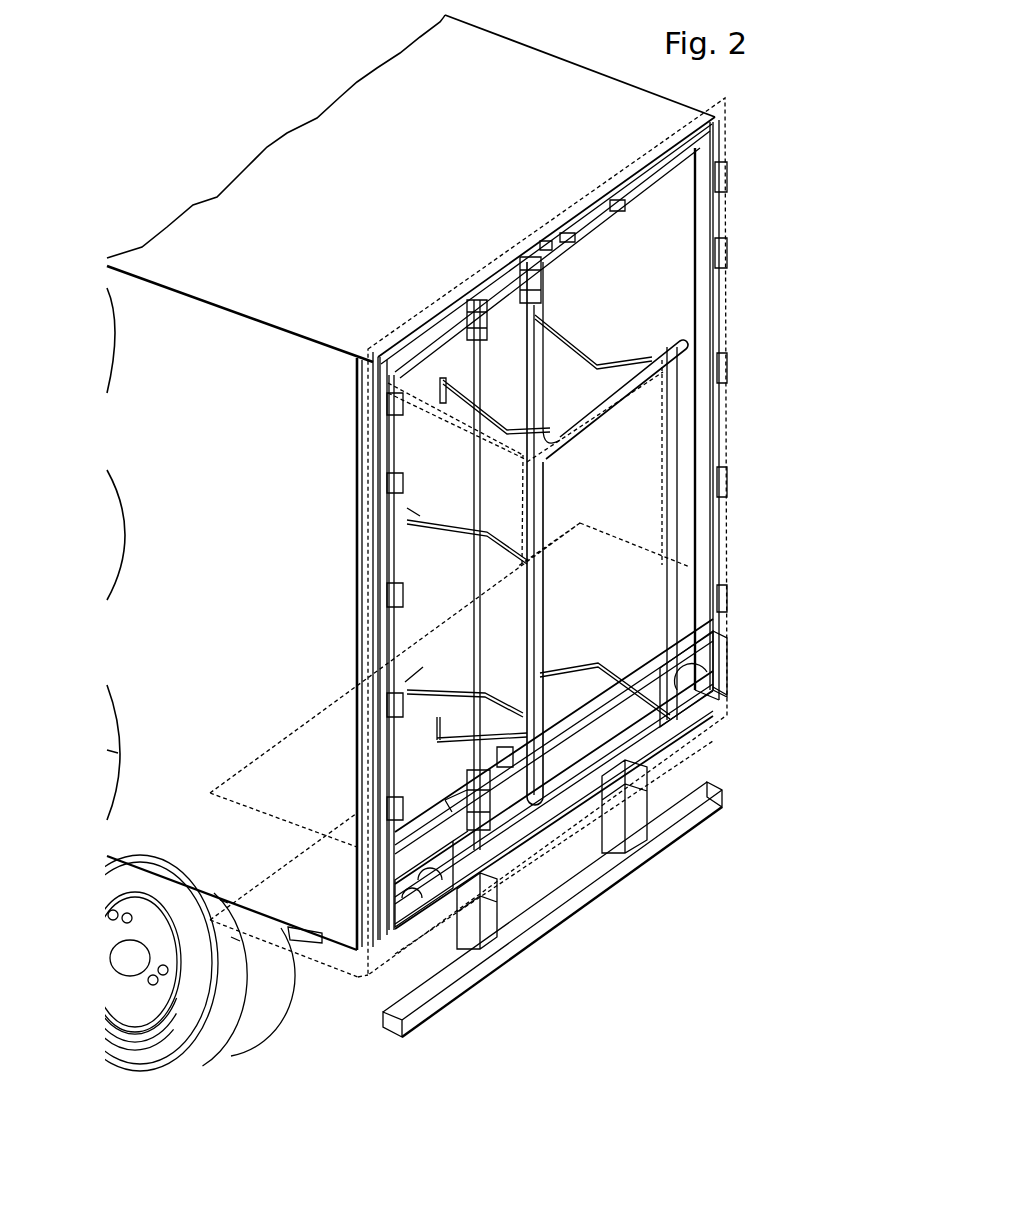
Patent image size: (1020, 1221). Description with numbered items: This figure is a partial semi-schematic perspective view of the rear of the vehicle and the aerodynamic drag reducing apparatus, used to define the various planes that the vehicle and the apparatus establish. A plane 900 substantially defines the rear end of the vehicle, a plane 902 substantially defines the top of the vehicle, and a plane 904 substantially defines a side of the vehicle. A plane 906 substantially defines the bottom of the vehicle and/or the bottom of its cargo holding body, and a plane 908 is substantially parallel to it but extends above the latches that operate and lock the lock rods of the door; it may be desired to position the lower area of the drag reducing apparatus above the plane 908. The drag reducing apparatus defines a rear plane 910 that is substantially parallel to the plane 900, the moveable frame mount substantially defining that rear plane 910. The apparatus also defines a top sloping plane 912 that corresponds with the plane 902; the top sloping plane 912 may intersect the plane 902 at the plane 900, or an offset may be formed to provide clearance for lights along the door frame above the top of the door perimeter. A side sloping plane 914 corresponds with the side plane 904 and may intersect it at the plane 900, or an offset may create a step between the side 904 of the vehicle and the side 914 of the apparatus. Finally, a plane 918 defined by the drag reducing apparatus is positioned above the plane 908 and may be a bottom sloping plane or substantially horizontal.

The plane 900 is at (733, 530).
The plane 902 is at (351, 267).
The plane 904 is at (277, 700).
The plane 906 is at (332, 966).
The plane 908 is at (210, 795).
The rear plane 910 is at (662, 497).
The upper support arm 912 is at (647, 357).
The side sloping plane 914 is at (443, 417).
The plane 918 is at (640, 695).